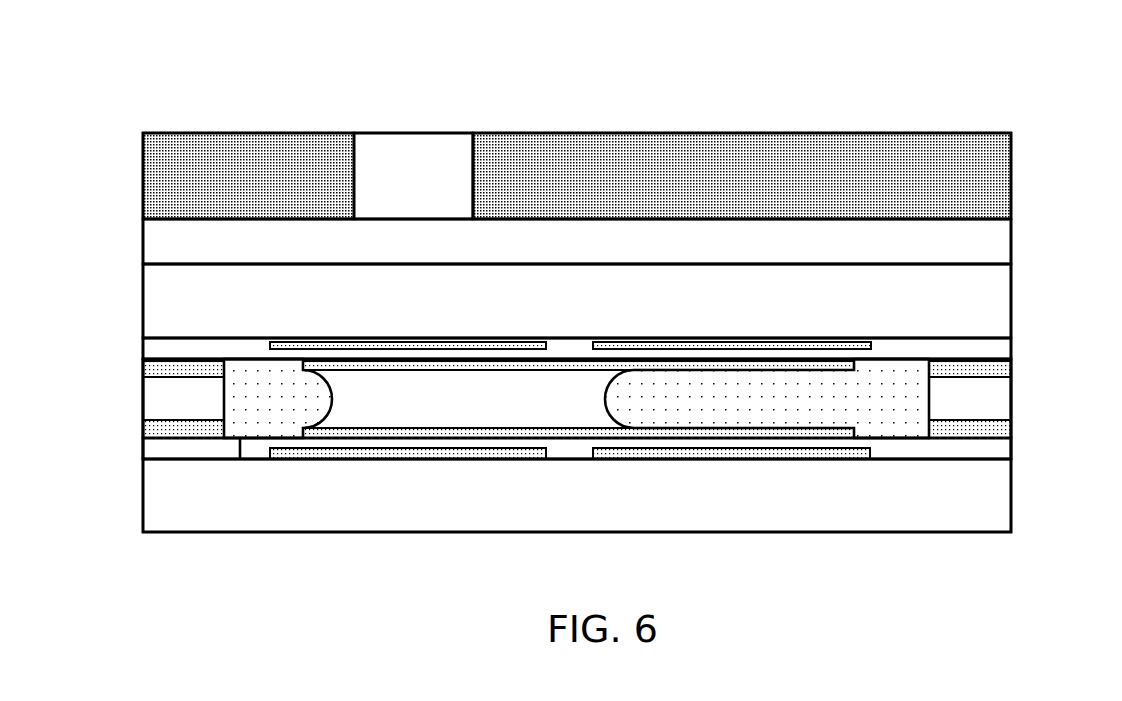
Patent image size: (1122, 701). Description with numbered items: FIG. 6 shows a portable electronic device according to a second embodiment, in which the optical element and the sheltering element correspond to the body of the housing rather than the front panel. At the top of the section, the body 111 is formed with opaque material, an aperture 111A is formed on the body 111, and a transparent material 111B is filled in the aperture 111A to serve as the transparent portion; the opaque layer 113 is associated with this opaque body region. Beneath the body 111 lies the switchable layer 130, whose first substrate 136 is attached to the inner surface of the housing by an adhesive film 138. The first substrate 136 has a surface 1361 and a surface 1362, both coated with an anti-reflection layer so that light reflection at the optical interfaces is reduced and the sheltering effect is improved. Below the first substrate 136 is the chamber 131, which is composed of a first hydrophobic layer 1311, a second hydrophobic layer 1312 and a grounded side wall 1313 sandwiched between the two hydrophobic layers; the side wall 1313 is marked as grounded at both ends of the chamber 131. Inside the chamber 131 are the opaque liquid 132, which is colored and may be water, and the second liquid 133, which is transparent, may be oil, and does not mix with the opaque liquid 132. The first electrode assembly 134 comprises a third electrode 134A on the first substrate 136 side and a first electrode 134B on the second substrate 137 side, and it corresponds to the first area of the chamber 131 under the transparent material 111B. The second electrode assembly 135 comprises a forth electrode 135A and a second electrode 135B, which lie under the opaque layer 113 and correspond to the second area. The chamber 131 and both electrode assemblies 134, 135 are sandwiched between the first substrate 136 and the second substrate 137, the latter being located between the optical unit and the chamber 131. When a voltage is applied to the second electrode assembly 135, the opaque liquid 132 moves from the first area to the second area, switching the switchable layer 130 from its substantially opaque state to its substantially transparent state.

The body 111 is at (1002, 178).
The aperture 111A is at (475, 176).
The transparent material 111B is at (412, 140).
The opaque layer 113 is at (148, 216).
The switchable layer 130 is at (136, 401).
The chamber 131 is at (630, 37).
The first hydrophobic layer 1311 is at (1002, 348).
The second hydrophobic layer 1312 is at (1002, 448).
The side wall 1313 is at (1002, 400).
The opaque liquid 132 is at (802, 400).
The second liquid 133 is at (572, 400).
The first electrode assembly 134 is at (787, 37).
The third electrode 134A is at (300, 343).
The first electrode 134B is at (301, 458).
The second electrode assembly 135 is at (943, 37).
The forth electrode 135A is at (857, 343).
The second electrode 135B is at (855, 458).
The first substrate 136 is at (972, 288).
The surface 1361 is at (951, 263).
The surface 1362 is at (978, 338).
The second substrate 137 is at (1002, 512).
The adhesive film 138 is at (1002, 249).